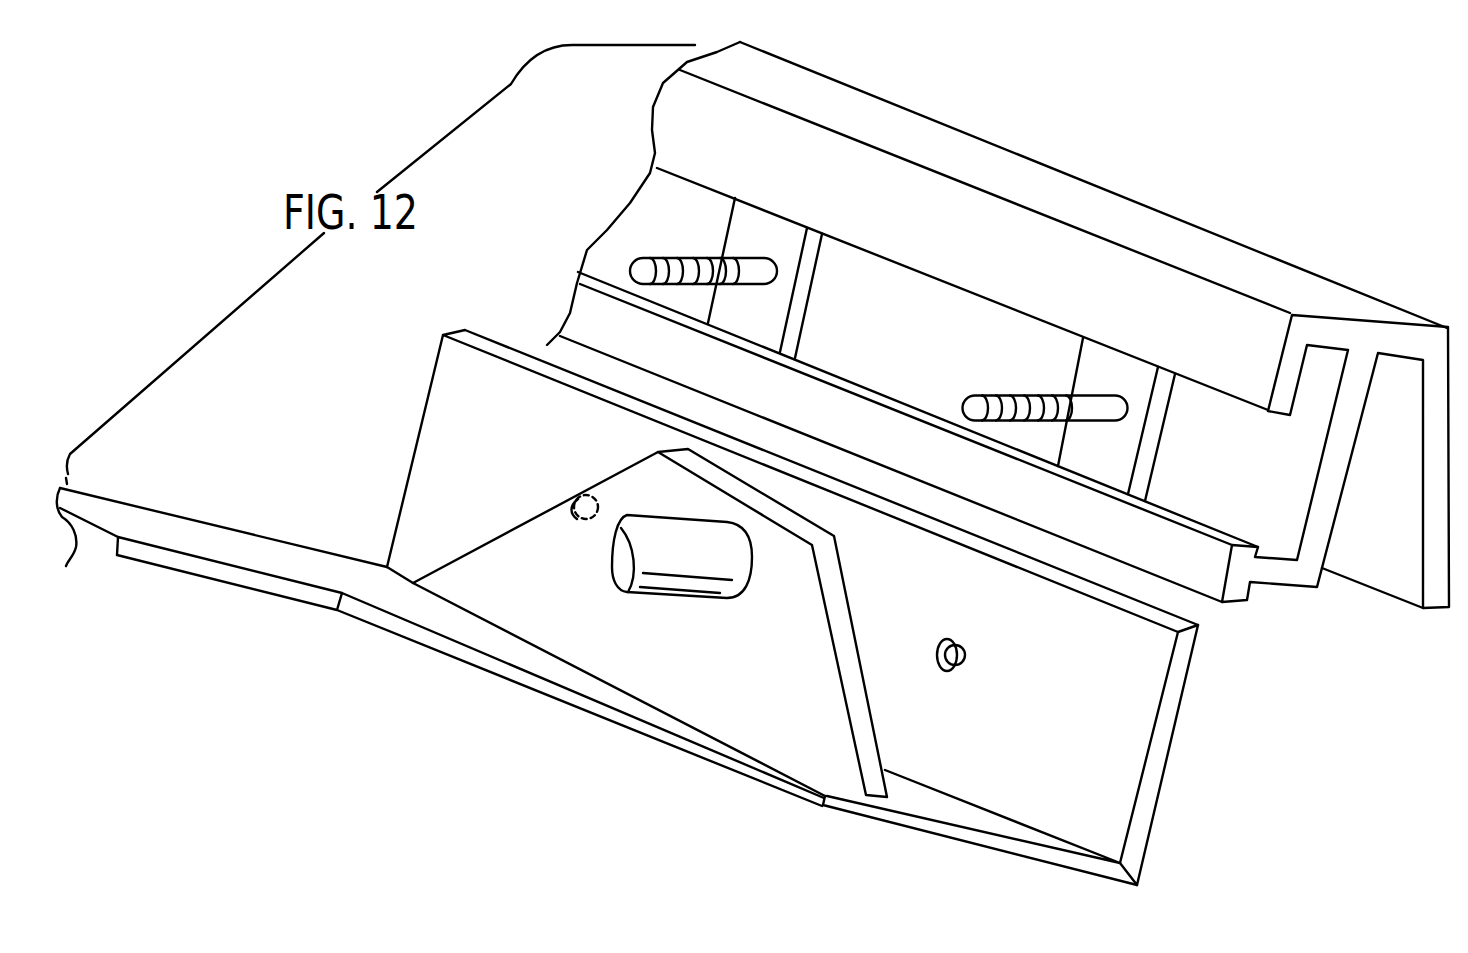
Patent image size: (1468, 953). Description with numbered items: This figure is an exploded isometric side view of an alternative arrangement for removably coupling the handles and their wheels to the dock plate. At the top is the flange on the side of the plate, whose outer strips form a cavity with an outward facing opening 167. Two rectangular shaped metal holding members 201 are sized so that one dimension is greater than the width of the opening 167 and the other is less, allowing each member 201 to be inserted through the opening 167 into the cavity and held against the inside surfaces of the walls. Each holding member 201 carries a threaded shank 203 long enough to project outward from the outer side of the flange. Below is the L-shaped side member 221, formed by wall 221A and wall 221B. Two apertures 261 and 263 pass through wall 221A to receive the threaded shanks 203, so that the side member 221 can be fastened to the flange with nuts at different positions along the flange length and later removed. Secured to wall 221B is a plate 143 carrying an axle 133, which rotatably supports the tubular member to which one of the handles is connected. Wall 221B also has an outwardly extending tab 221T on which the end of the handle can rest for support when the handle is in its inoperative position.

The outward facing opening 167 is at (983, 353).
The threaded shank 203 is at (1033, 385).
The rectangular shaped metal holding member 201 is at (998, 325).
The L-shaped side member 221 is at (666, 615).
The wall 221A is at (1173, 738).
The wall 221B is at (992, 852).
The outwardly extending tab 221T is at (275, 595).
The aperture 261 is at (958, 652).
The aperture 263 is at (573, 504).
The axle 133 is at (655, 592).
The plate 143 is at (821, 734).